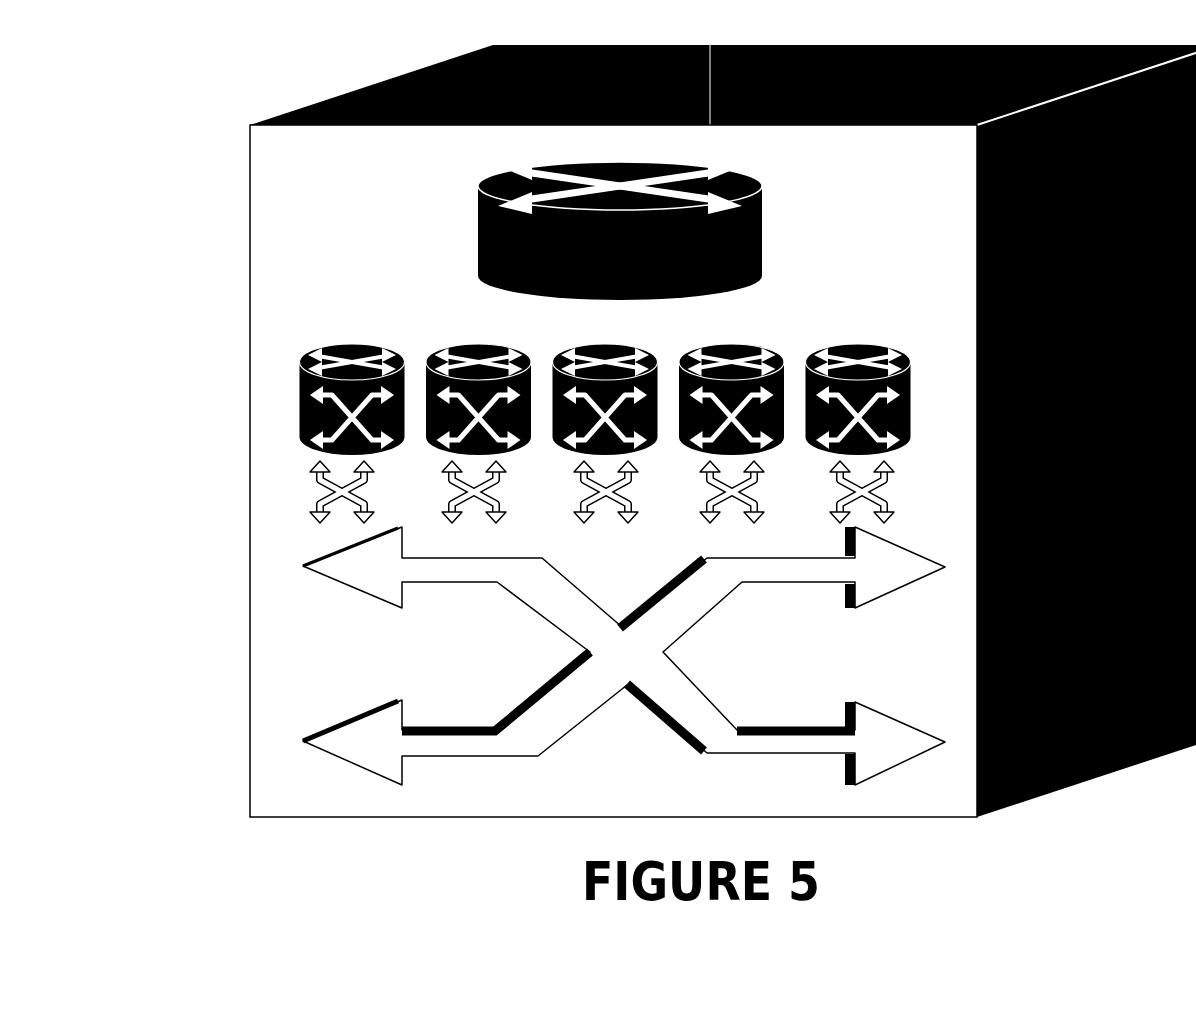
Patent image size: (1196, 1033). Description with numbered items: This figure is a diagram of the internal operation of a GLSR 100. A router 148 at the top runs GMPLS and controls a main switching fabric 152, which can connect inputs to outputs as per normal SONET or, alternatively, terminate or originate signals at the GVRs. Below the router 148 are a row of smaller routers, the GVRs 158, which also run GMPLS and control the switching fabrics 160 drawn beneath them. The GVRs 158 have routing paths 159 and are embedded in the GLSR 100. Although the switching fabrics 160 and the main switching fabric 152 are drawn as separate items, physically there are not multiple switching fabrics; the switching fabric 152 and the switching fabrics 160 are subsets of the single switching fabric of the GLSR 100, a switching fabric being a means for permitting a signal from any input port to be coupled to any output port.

The GLSR 100 is at (230, 168).
The router 148 is at (762, 237).
The main switching fabric 152 is at (893, 578).
The GVRs 158 is at (350, 344).
The routing paths 159 is at (378, 437).
The switching fabrics 160 is at (447, 520).